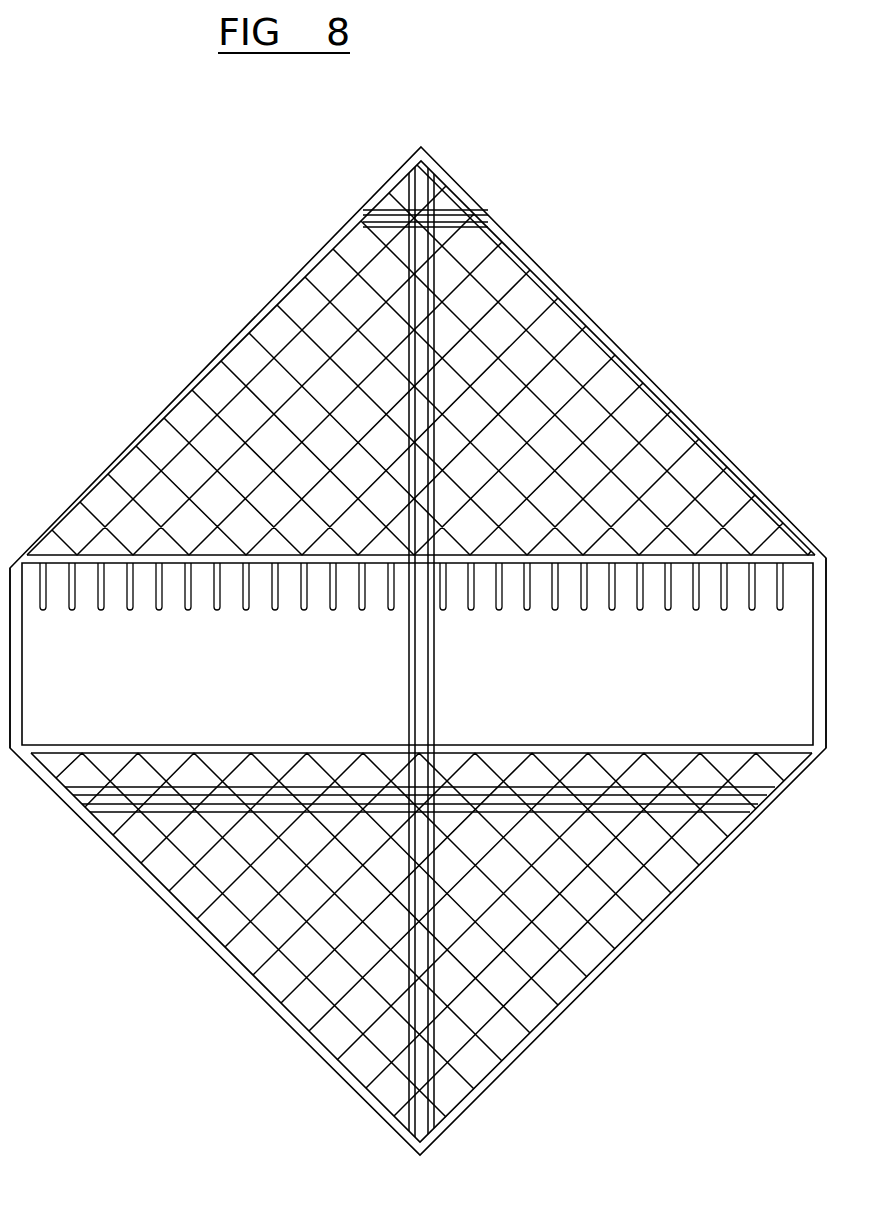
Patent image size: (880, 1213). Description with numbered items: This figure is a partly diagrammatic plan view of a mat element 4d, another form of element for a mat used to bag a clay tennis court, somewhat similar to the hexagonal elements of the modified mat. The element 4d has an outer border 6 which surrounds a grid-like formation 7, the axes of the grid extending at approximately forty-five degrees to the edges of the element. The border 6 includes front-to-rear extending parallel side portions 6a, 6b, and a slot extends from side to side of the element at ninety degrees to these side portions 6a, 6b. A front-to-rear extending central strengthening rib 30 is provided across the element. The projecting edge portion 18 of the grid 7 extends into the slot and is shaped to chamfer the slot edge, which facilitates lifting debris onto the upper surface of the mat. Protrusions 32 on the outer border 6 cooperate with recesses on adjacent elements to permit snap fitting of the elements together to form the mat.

The mat element 4d is at (730, 433).
The outer border 6 is at (635, 372).
The side portion of border 6a is at (12, 707).
The side portion of border 6b is at (817, 665).
The grid-like formation 7 is at (548, 330).
The central strengthening rib 30 is at (403, 653).
The projecting edge portion of grid 18 is at (480, 583).
The protrusions 32 is at (512, 749).